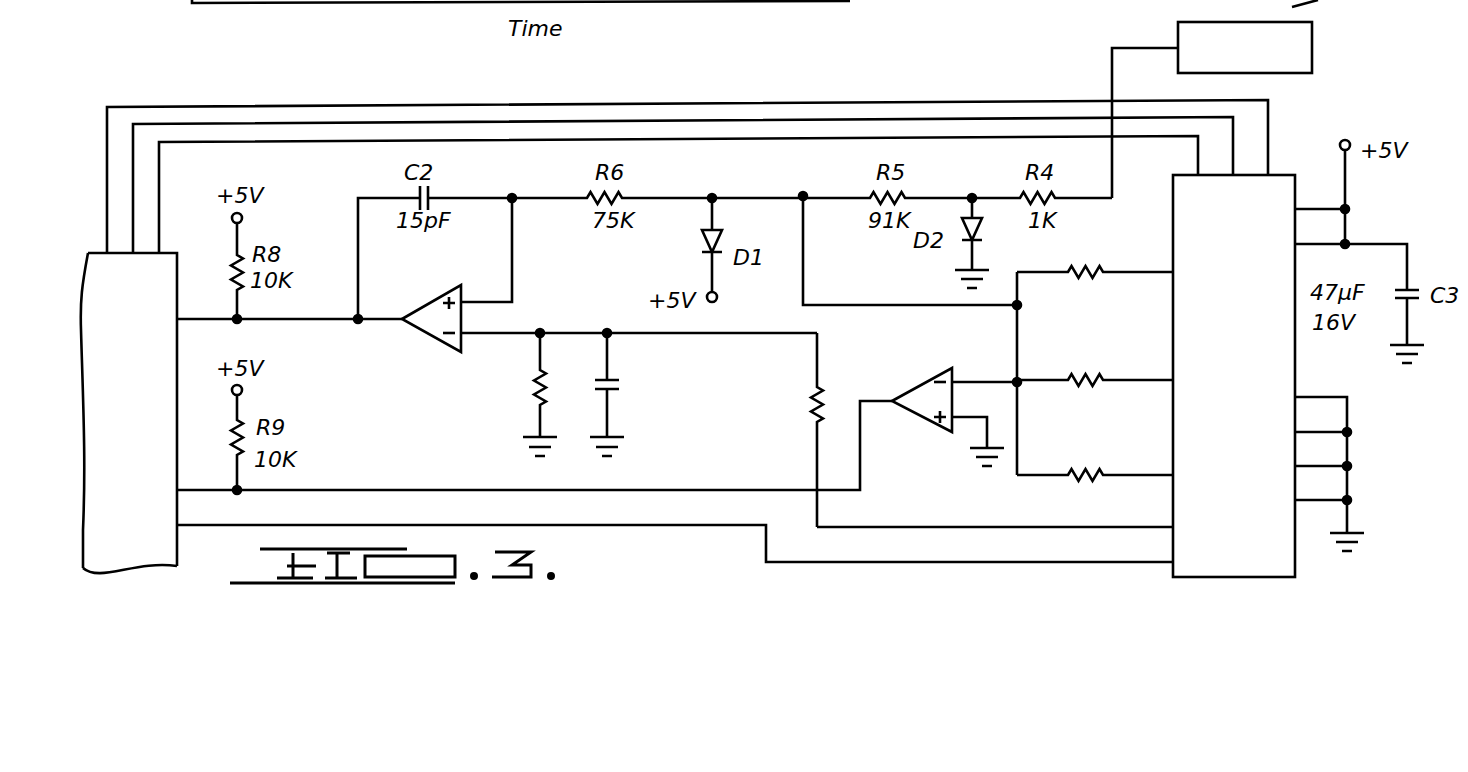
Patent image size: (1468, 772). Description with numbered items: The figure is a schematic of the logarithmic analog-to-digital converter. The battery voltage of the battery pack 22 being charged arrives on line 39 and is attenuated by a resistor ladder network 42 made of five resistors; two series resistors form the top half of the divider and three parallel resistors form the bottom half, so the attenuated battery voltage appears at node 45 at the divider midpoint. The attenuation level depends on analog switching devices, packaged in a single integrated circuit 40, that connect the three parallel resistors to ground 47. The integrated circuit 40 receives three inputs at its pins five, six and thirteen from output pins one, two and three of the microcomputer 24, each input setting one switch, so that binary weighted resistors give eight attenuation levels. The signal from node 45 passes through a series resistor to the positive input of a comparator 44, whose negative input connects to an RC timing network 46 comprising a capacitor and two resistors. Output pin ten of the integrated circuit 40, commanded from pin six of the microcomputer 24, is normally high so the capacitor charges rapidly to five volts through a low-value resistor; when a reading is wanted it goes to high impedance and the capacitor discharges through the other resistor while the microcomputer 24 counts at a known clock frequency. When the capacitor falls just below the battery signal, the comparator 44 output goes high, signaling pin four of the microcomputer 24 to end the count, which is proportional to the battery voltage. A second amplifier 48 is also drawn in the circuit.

The battery pack 22 is at (1312, 62).
The microcomputer 24 is at (138, 428).
The line 39 is at (1110, 73).
The integrated circuit 40 is at (1245, 432).
The resistor ladder network 42 is at (1075, 217).
The comparator 44 is at (424, 330).
The node 45 is at (803, 192).
The RC timing network 46 is at (785, 419).
The ground 47 is at (1350, 452).
The comparator amplifier 48 is at (916, 418).